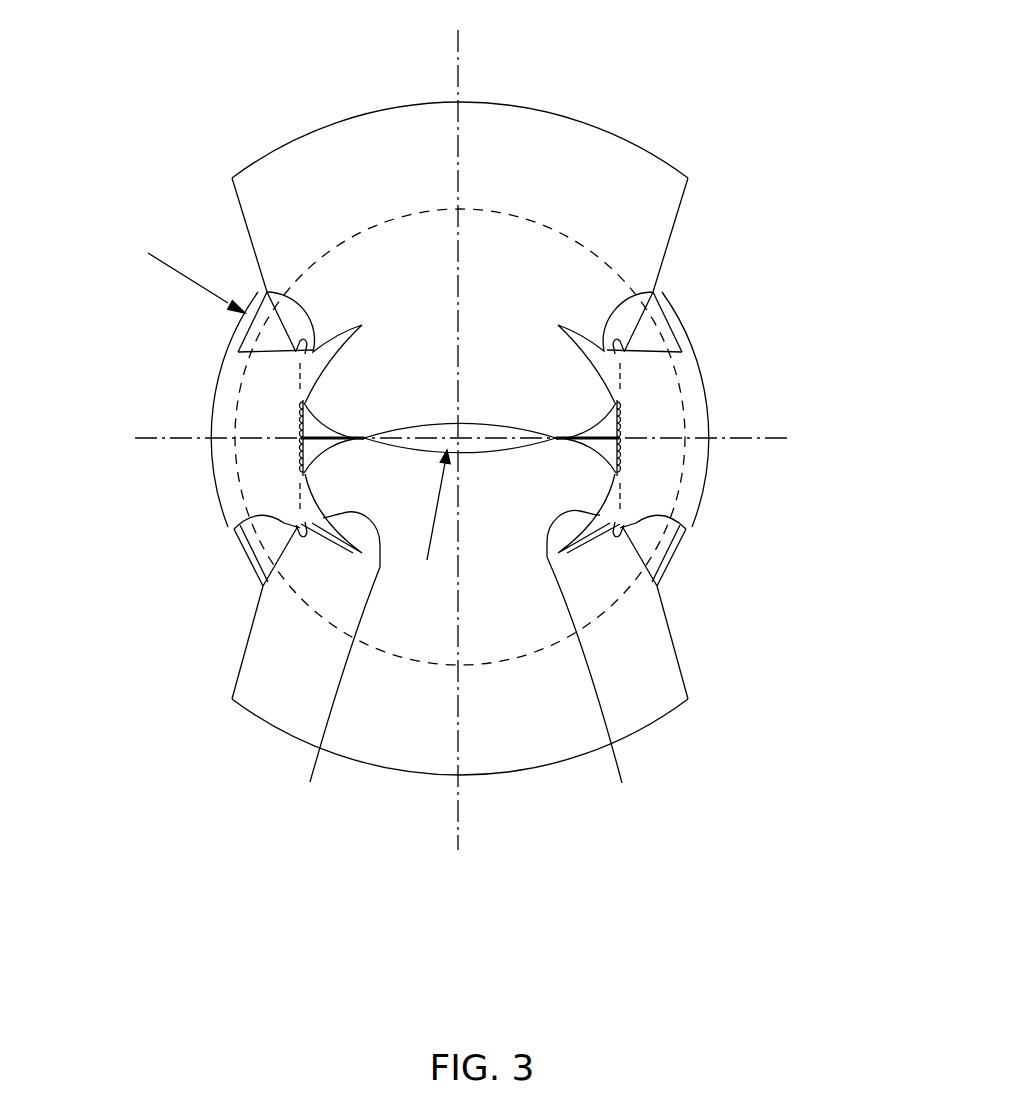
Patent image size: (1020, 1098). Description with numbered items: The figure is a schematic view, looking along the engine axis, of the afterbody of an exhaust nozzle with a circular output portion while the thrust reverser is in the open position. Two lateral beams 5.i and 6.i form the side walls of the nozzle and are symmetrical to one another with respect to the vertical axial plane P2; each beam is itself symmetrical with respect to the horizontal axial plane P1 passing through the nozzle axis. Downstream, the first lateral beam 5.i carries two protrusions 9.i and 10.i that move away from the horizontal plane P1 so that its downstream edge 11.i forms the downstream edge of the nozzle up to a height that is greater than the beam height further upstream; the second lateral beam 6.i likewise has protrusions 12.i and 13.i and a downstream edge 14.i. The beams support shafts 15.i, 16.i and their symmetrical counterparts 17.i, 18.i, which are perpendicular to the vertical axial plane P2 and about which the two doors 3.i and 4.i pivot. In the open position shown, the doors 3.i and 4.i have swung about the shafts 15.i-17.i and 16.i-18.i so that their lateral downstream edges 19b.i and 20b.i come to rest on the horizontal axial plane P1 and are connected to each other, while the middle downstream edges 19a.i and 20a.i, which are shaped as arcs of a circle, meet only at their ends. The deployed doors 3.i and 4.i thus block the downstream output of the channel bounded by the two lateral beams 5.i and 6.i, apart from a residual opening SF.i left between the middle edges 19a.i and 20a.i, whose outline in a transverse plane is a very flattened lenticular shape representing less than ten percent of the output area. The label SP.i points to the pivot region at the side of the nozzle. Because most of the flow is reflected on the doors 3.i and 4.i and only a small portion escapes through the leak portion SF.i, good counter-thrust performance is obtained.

The door 3.i is at (468, 129).
The door 4.i is at (460, 740).
The lateral beam 5.i is at (240, 447).
The second lateral beam 6.i is at (709, 412).
The protrusion 9.i is at (267, 292).
The protrusion 10.i is at (325, 537).
The downstream edge 11.i is at (332, 693).
The protrusion 12.i is at (653, 292).
The protrusion 13.i is at (628, 560).
The downstream edge 14.i is at (597, 685).
The shaft 15.i is at (238, 352).
The shaft 16.i is at (237, 530).
The shaft 17.i is at (684, 353).
The shaft 18.i is at (618, 536).
The middle downstream edge 19a.i is at (436, 423).
The lateral downstream edge 19b.i is at (310, 474).
The middle downstream edge 20a.i is at (474, 456).
The lateral downstream edge 20b.i is at (343, 443).
The pole gap SP.i is at (174, 275).
The residual opening SF.i is at (427, 519).
The horizontal axial plane P1 is at (473, 426).
The vertical axial plane P2 is at (459, 426).